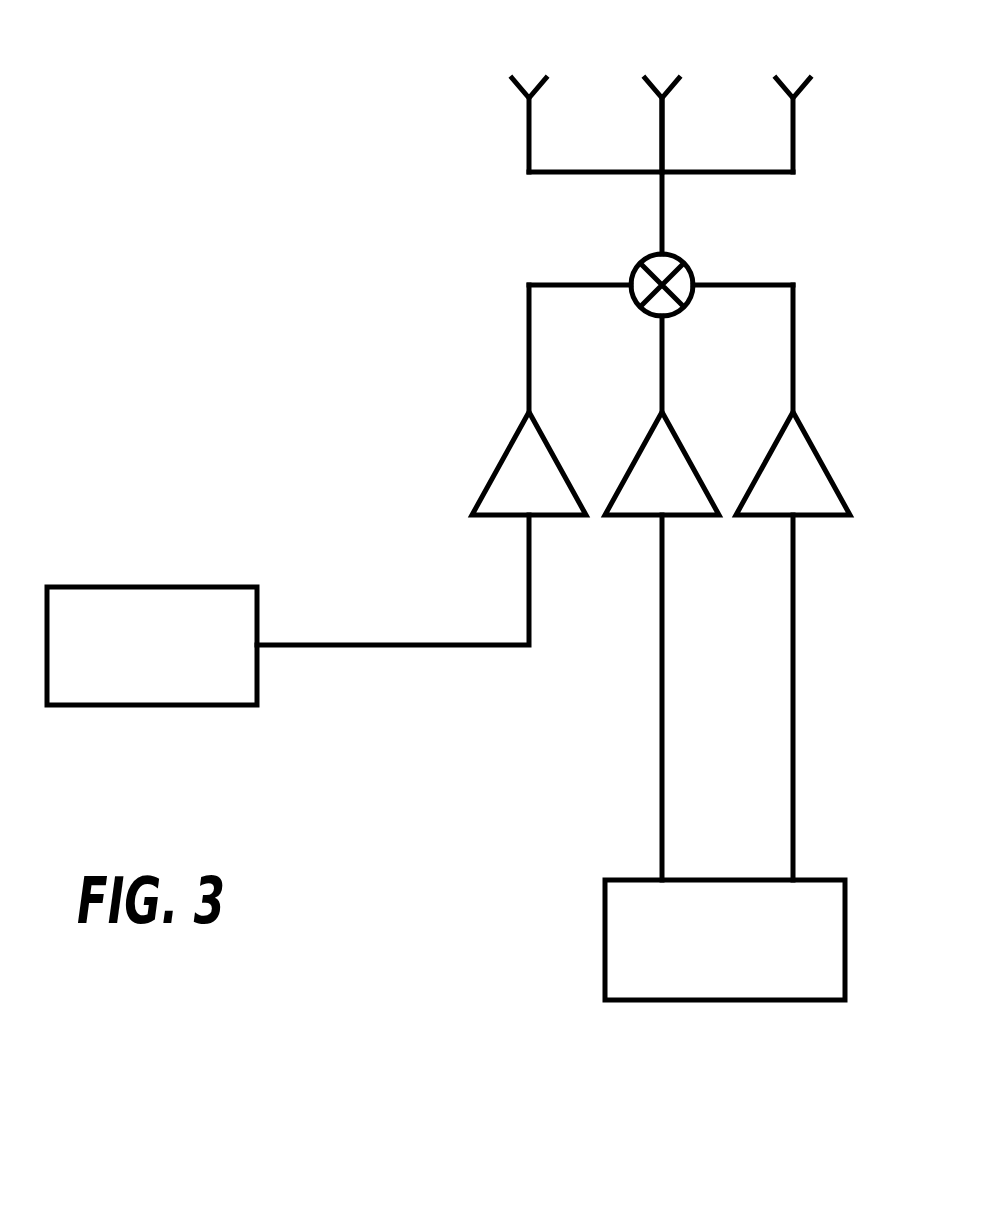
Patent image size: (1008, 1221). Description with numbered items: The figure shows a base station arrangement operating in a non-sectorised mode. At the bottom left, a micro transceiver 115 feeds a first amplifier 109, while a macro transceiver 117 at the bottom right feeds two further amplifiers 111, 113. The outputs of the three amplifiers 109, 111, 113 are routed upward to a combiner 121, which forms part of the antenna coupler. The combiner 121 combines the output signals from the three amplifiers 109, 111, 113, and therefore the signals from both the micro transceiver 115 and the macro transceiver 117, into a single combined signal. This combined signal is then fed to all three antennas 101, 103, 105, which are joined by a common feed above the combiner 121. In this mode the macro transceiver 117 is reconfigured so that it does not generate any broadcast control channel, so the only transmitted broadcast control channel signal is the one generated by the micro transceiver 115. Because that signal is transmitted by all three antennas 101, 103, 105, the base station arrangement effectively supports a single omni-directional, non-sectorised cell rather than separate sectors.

The antenna 101 is at (513, 97).
The antenna 103 is at (670, 73).
The antenna 105 is at (813, 93).
The amplifier 109 is at (502, 457).
The amplifier 111 is at (682, 437).
The amplifier 113 is at (820, 450).
The micro transceiver 115 is at (152, 705).
The macro transceiver 117 is at (753, 1000).
The combiner 121 is at (693, 270).